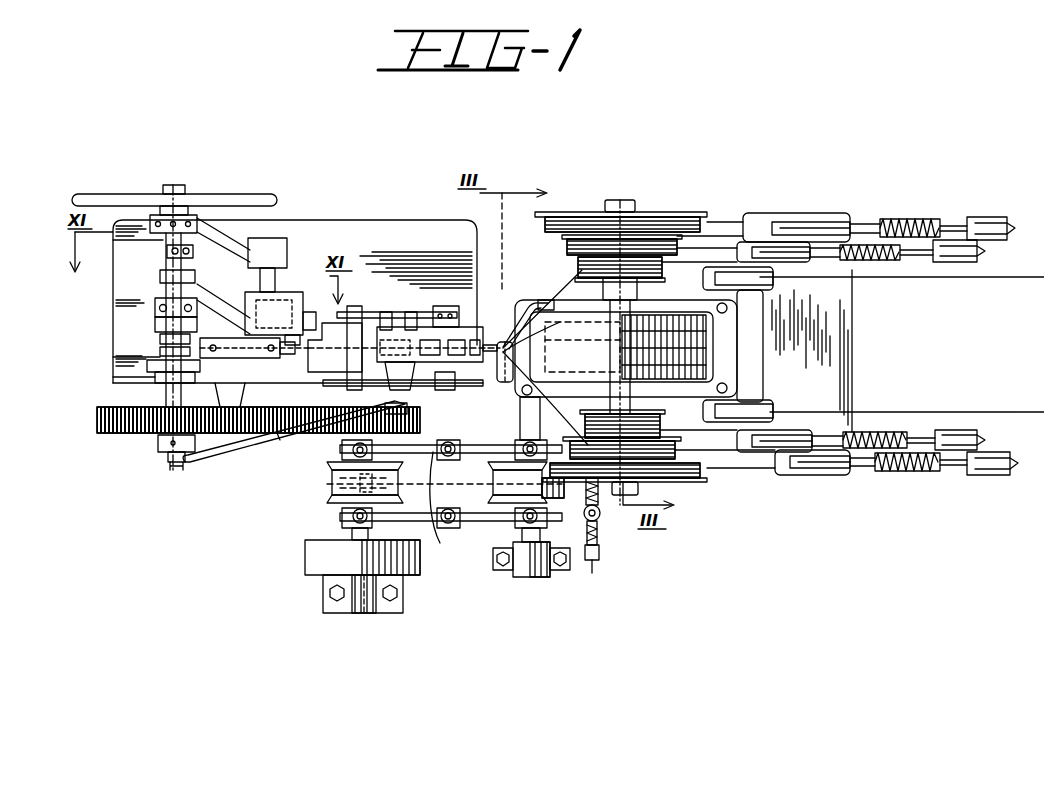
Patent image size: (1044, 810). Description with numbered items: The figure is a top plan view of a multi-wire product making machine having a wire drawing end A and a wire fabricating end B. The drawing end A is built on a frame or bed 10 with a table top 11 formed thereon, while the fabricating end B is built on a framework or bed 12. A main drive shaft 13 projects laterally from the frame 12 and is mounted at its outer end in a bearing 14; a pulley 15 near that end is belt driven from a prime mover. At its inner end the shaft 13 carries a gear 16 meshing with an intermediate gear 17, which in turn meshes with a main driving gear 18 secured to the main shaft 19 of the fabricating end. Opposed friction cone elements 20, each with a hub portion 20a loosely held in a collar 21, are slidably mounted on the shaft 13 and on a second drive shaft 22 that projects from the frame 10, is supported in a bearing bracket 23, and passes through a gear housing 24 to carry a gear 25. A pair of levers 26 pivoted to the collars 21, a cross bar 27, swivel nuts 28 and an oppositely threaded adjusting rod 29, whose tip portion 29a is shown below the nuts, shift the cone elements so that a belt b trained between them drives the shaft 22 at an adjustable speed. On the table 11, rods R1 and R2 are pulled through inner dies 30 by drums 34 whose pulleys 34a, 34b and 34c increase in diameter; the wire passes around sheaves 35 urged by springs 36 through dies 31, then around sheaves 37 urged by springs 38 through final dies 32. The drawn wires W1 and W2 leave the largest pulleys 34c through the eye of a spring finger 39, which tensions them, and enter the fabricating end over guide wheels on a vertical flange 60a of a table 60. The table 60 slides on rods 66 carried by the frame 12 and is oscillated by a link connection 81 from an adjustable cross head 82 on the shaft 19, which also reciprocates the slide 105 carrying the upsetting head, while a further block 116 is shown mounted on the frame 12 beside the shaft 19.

The wire fabricating end B is at (390, 240).
The framework or bed 12 is at (444, 246).
The main shaft 19 is at (172, 395).
The actuating block 116 is at (272, 290).
The slide 105 is at (242, 358).
The main driving gear 18 is at (115, 434).
The adjustable cross head 82 is at (172, 442).
The oscillating link connection 81 is at (234, 456).
The intermediate gear 17 is at (278, 432).
The gear 16 is at (420, 416).
The rods 66 is at (368, 312).
The vertical flange 60a is at (463, 330).
The table 60 is at (440, 366).
The gear 25 is at (508, 382).
The spring finger 39 is at (518, 322).
The drawn wire W2 is at (566, 300).
The drawn wire W1 is at (545, 410).
The gear housing 24 is at (568, 320).
The frame or bed 10 is at (738, 356).
The table top 11 is at (850, 324).
The rod R2 is at (962, 278).
The rod R1 is at (894, 412).
The wire drawing drum 34 is at (652, 212).
The largest pulley 34c is at (540, 222).
The intermediate drawing pulley 34b is at (566, 242).
The smallest or innermost pulley 34a is at (580, 262).
The wire drawing end A is at (790, 212).
The final reducing die 32 is at (820, 226).
The spring 38 is at (906, 222).
The sheave 37 is at (1002, 222).
The drawing die 31 is at (805, 262).
The spring 36 is at (892, 258).
The sheave 35 is at (972, 254).
The inner drawing die 30 is at (766, 288).
The friction cone element 20 is at (492, 445).
The hub portion 20a is at (375, 438).
The collar 21 is at (342, 444).
The lever 26 is at (446, 498).
The cross bar 27 is at (450, 500).
The belt b is at (332, 482).
The main drive shaft 13 is at (335, 546).
The pulley 15 is at (326, 556).
The bearing 14 is at (362, 610).
The drive shaft 22 is at (514, 540).
The bearing bracket 23 is at (532, 570).
The swivel nut 28 is at (598, 420).
The adjusting rod 29 is at (599, 546).
The screw tip 29a is at (592, 562).